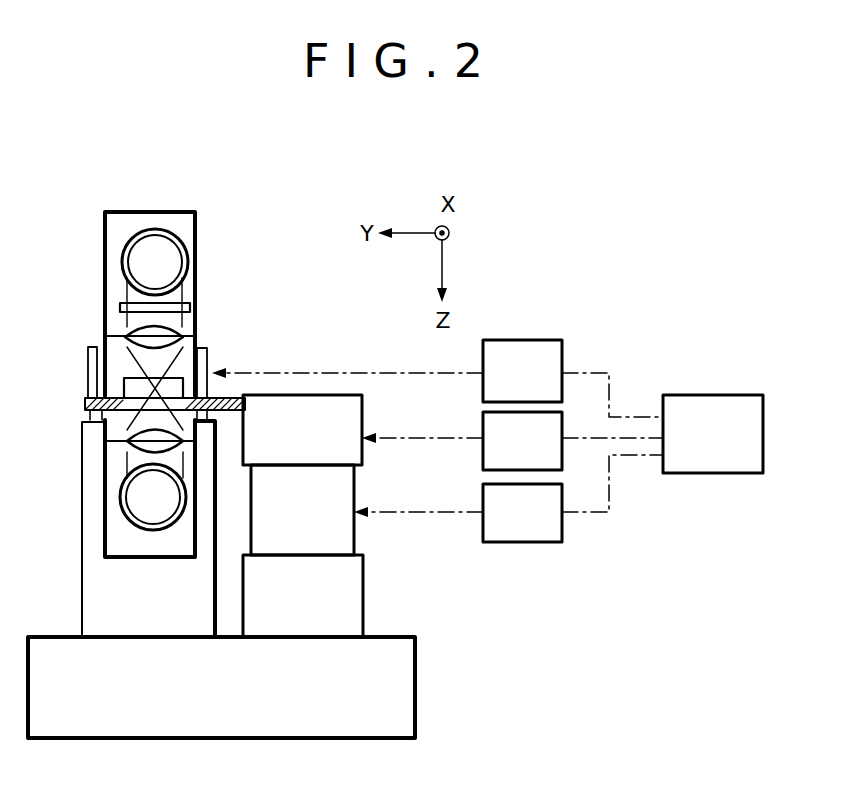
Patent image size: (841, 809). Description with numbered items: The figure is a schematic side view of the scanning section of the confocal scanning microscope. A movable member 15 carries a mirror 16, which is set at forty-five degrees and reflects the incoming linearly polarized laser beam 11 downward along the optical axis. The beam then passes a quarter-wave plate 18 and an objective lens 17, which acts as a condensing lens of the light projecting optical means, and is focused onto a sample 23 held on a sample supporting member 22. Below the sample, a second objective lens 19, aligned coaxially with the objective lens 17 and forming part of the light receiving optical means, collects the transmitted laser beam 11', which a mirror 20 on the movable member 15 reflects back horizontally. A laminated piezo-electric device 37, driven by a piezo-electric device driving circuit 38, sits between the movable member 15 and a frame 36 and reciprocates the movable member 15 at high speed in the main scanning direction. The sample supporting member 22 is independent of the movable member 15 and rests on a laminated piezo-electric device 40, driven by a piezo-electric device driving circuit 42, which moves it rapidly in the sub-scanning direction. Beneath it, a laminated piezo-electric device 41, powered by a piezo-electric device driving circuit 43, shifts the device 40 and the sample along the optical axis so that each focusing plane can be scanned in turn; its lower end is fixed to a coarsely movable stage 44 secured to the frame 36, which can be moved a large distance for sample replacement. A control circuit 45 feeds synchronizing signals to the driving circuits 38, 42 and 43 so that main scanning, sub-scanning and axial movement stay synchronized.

The laser beam 11 is at (147, 220).
The laser beam 11' is at (153, 534).
The movable member 15 is at (219, 198).
The mirror 16 is at (181, 238).
The objective lens 17 is at (163, 332).
The quarter-wave plate 18 is at (189, 305).
The objective lens 19 is at (143, 445).
The mirror 20 is at (126, 523).
The sample supporting member 22 is at (78, 398).
The sample 23 is at (168, 378).
The frame 36 is at (92, 477).
The laminated piezo-electric device 37 is at (87, 362).
The piezo-electric device driving circuit 38 is at (503, 387).
The laminated piezo-electric device 40 is at (280, 449).
The laminated piezo-electric device 41 is at (280, 531).
The piezo-electric device driving circuit 42 is at (503, 458).
The piezo-electric device driving circuit 43 is at (503, 530).
The coarsely movable stage 44 is at (283, 612).
The control circuit 45 is at (690, 455).